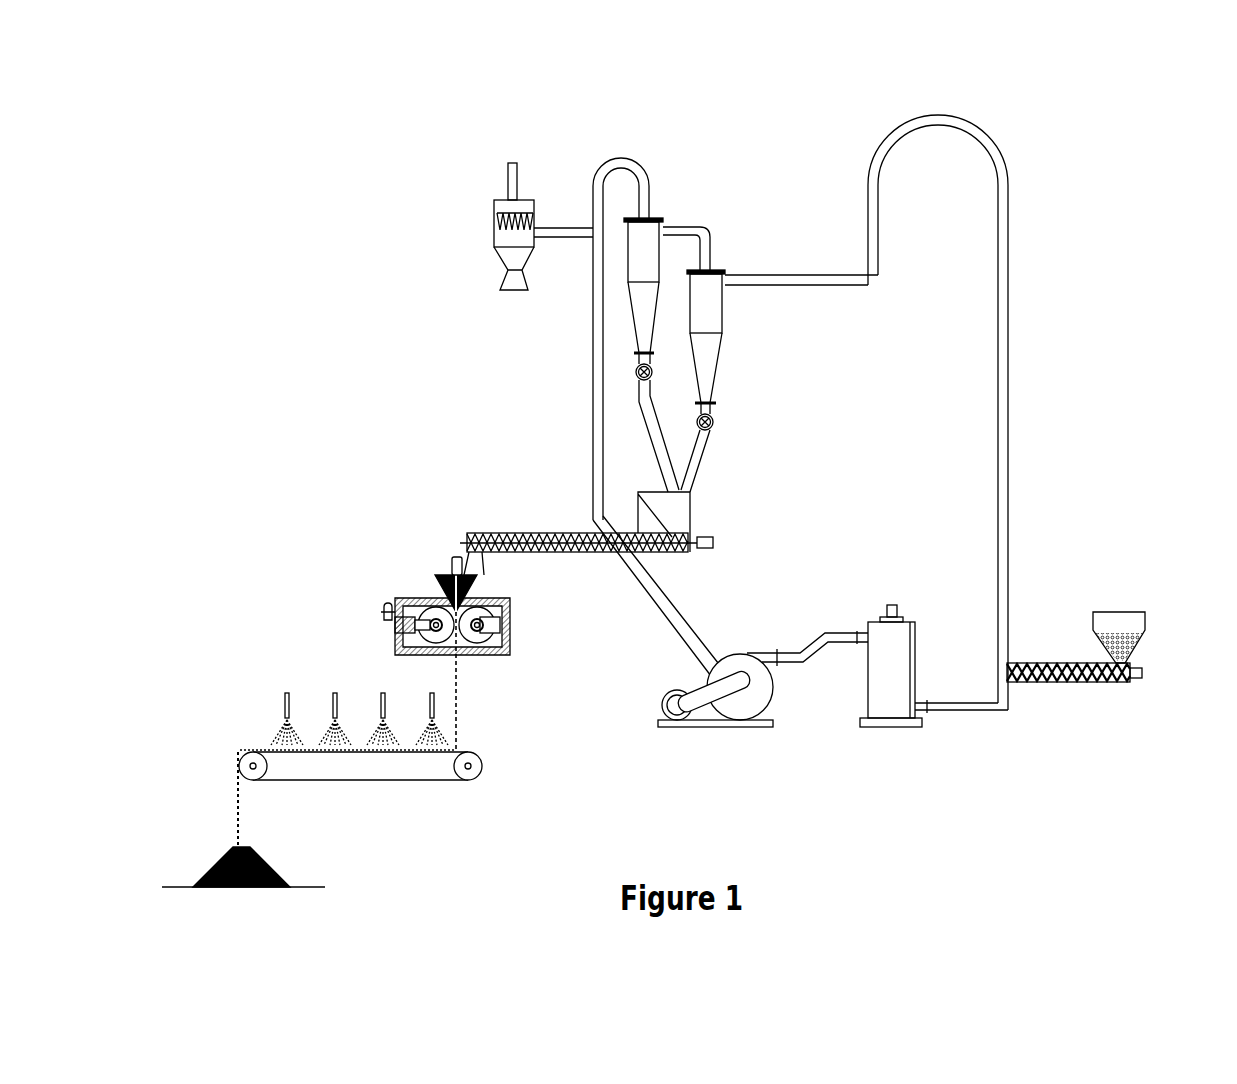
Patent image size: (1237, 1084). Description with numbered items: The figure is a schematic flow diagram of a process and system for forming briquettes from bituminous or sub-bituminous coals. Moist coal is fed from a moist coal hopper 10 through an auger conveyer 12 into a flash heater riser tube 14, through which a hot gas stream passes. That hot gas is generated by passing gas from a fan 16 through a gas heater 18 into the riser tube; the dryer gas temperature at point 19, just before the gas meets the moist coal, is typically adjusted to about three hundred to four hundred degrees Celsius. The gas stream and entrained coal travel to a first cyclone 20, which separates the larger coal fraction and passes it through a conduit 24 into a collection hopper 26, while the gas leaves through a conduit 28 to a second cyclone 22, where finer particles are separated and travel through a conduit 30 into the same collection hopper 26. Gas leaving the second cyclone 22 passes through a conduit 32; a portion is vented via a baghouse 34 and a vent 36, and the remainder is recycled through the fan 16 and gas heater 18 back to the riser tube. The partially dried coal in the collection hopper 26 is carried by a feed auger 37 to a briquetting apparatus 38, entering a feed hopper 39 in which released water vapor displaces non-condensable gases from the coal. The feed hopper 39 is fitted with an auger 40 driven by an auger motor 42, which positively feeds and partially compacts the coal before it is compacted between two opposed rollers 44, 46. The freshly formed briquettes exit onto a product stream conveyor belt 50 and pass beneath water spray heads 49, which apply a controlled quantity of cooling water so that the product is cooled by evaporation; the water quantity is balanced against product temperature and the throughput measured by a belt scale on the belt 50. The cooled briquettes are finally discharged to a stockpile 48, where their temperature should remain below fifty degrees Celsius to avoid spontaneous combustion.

The moist coal hopper 10 is at (1147, 620).
The auger conveyer 12 is at (1075, 683).
The flash heater riser tube 14 is at (1010, 420).
The fan 16 is at (720, 727).
The gas heater 18 is at (898, 727).
The point in gas stream before mixing with coal 19 is at (978, 712).
The first cyclone 20 is at (722, 358).
The second cyclone 22 is at (628, 322).
The conduit 24 is at (708, 452).
The collection hopper 26 is at (693, 512).
The conduit 28 is at (710, 225).
The conduit 30 is at (643, 435).
The conduit 32 is at (640, 157).
The baghouse 34 is at (498, 260).
The vent 36 is at (508, 178).
The feed auger 37 is at (540, 553).
The briquetting apparatus 38 is at (382, 615).
The feed hopper 39 is at (435, 590).
The auger 40 is at (447, 572).
The auger motor 42 is at (455, 556).
The roller 44 is at (397, 634).
The roller 46 is at (484, 633).
The stockpile 48 is at (272, 867).
The water spray heads 49 is at (283, 705).
The product stream conveyor belt 50 is at (483, 757).